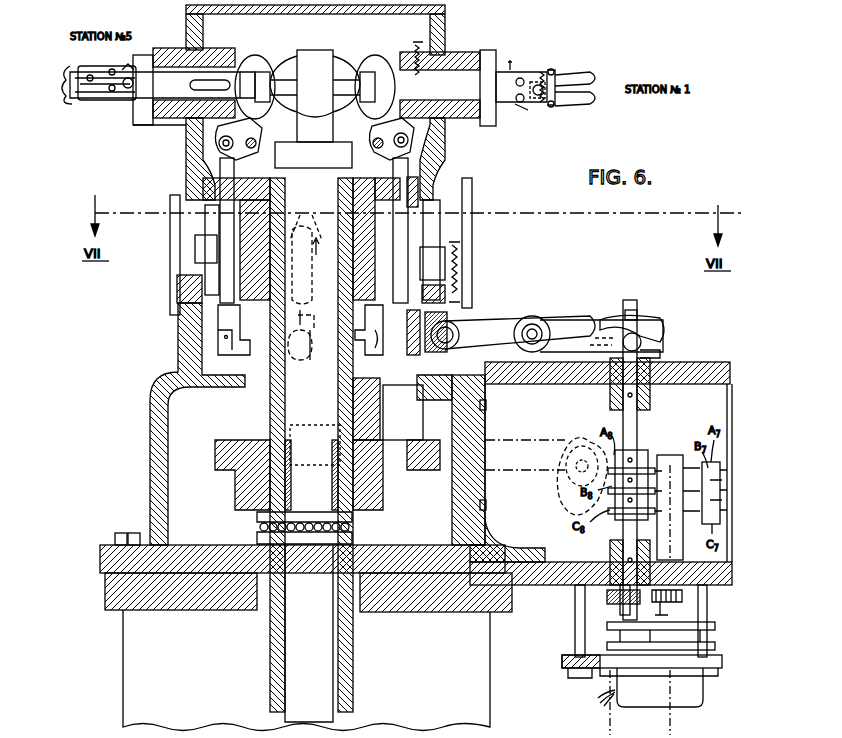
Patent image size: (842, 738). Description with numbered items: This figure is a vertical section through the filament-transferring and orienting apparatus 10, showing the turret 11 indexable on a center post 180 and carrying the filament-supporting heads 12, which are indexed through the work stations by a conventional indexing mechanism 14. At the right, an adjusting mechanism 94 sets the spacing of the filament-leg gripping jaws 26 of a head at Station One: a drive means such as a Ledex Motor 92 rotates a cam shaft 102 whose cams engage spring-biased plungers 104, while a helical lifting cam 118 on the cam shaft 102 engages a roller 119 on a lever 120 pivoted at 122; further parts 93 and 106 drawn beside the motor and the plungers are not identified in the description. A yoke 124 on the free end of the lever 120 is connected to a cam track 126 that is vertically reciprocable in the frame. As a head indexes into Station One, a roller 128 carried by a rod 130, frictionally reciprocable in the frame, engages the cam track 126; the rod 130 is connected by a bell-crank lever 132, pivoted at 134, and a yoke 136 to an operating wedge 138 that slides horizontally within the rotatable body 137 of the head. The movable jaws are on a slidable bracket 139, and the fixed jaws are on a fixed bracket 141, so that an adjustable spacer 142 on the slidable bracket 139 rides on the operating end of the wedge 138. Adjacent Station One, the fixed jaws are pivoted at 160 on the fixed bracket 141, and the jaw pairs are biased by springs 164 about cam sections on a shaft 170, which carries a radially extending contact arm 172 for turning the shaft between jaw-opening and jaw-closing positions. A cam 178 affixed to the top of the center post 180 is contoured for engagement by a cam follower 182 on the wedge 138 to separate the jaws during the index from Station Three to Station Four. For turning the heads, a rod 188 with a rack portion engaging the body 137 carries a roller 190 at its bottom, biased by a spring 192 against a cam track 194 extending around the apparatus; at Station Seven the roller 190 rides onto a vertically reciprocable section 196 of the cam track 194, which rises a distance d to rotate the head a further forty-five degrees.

The filament-transferring and orienting apparatus 10 is at (146, 372).
The turret 11 is at (178, 167).
The filament-supporting head 12 is at (192, 55).
The indexing mechanism 14 is at (396, 488).
The filament-leg gripping jaws 26 is at (590, 82).
The Ledex Motor 92 is at (684, 700).
The motor lead wires 93 is at (599, 701).
The adjusting mechanism 94 is at (582, 414).
The cam shaft 102 is at (628, 310).
The spring-biased plungers 104 is at (650, 468).
The switch block 106 is at (668, 458).
The helical lifting cam 118 is at (656, 322).
The roller 119 is at (660, 336).
The lever 120 is at (578, 328).
The pivot 122 is at (534, 322).
The yoke 124 is at (462, 322).
The cam track 126 is at (403, 412).
The roller 128 is at (246, 335).
The rod 130 is at (222, 241).
The bell-crank lever 132 is at (352, 124).
The pivot 134 is at (356, 152).
The yoke 136 is at (258, 70).
The rotatable body 137 is at (172, 112).
The operating wedge 138 is at (170, 85).
The slidable bracket 139 is at (95, 95).
The fixed bracket 141 is at (122, 100).
The adjustable spacer 142 is at (125, 72).
The pivot 160 is at (520, 76).
The springs 164 is at (558, 108).
The shaft 170 is at (556, 80).
The contact arm 172 is at (520, 108).
The cam 178 is at (280, 60).
The center post 180 is at (314, 58).
The cam follower 182 is at (263, 82).
The rod 188 is at (205, 221).
The roller 190 is at (197, 258).
The spring 192 is at (456, 276).
The cam track 194 is at (180, 290).
The vertically reciprocable section 196 is at (288, 268).